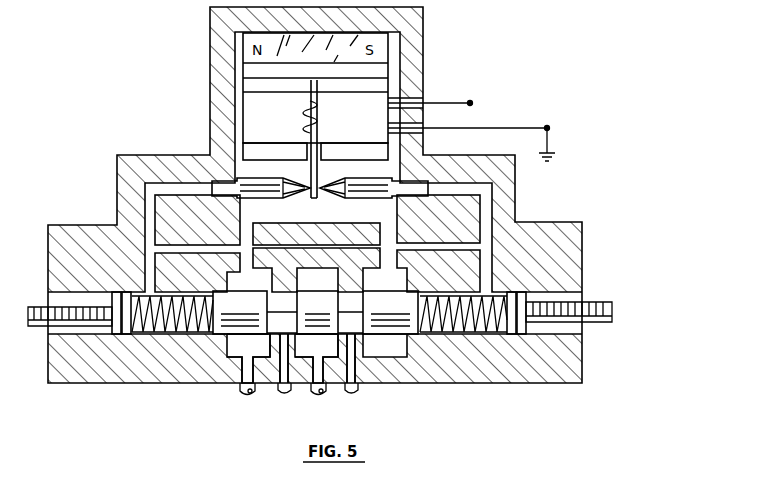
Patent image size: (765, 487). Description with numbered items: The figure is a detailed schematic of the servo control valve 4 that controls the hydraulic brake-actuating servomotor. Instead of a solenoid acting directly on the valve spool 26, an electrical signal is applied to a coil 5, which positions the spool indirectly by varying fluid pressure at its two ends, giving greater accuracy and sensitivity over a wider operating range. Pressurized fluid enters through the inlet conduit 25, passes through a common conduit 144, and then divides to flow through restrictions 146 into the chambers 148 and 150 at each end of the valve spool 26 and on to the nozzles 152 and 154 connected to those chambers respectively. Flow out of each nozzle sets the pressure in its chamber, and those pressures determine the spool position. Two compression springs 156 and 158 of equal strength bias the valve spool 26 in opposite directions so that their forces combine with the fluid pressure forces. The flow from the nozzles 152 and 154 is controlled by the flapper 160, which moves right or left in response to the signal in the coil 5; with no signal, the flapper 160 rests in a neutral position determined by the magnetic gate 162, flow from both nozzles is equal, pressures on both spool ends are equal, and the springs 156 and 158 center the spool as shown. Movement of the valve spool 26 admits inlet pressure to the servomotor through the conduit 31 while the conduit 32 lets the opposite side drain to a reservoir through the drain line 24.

The control valve 4 is at (113, 207).
The coil 5 is at (309, 118).
The drain line 24 is at (244, 388).
The inlet conduit 25 is at (323, 387).
The valve spool 26 is at (226, 290).
The conduit 31 is at (282, 387).
The conduit 32 is at (352, 387).
The common conduit 144 is at (318, 260).
The restrictions 146 is at (275, 246).
The chamber 148 is at (522, 293).
The chamber 150 is at (114, 296).
The nozzle 152 is at (331, 198).
The nozzle 154 is at (289, 197).
The compression spring 156 is at (462, 334).
The compression spring 158 is at (177, 335).
The flapper 160 is at (318, 176).
The magnetic gate 162 is at (311, 147).